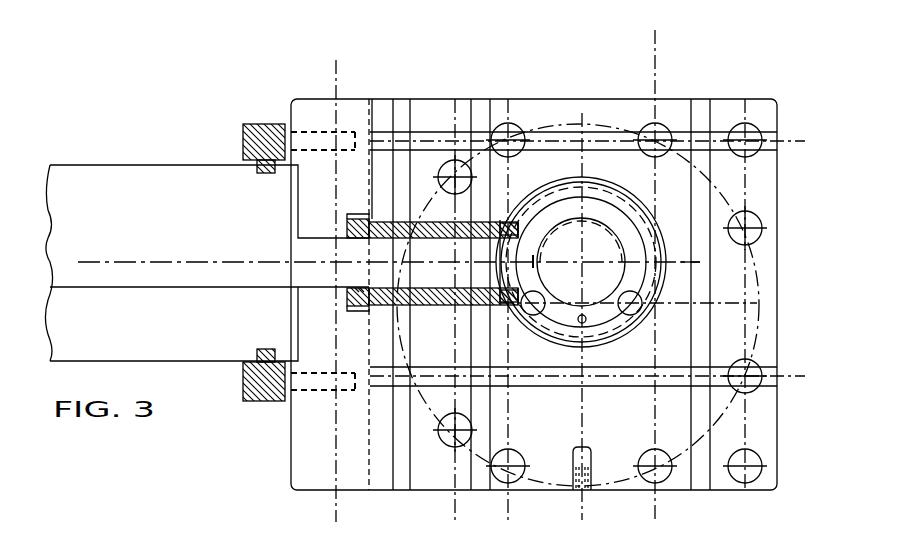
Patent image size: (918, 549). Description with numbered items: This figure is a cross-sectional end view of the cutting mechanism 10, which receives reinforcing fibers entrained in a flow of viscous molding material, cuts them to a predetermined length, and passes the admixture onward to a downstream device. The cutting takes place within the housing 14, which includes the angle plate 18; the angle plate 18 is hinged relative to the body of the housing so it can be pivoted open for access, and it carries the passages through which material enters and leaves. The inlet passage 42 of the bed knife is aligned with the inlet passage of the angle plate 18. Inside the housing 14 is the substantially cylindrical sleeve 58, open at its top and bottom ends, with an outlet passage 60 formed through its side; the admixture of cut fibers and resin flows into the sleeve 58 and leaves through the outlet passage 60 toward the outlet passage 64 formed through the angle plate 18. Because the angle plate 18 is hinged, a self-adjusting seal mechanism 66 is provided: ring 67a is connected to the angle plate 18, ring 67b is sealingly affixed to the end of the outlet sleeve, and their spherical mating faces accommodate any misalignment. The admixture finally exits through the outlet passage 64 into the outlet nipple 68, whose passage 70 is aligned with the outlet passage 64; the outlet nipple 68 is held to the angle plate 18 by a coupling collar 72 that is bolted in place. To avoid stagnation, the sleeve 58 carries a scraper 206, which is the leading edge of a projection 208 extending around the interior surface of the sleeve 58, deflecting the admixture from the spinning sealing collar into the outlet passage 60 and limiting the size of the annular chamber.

The cutting mechanism 10 is at (594, 50).
The housing 14 is at (476, 94).
The angle plate 18 is at (291, 446).
The inlet passage 42 is at (586, 323).
The sleeve 58 is at (619, 186).
The outlet passage 60 is at (512, 222).
The outlet passage 64 is at (323, 237).
The self-adjusting seal mechanism 66 is at (382, 218).
The sealing ring 67a is at (357, 288).
The sealing ring 67b is at (362, 288).
The outlet nipple 68 is at (112, 164).
The passage 70 is at (158, 237).
The coupling collar 72 is at (247, 123).
The scraper 206 is at (537, 263).
The projection 208 is at (566, 207).